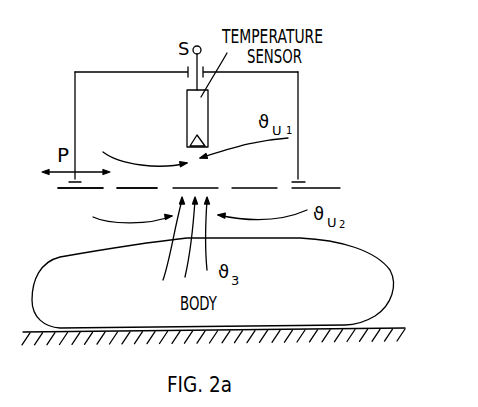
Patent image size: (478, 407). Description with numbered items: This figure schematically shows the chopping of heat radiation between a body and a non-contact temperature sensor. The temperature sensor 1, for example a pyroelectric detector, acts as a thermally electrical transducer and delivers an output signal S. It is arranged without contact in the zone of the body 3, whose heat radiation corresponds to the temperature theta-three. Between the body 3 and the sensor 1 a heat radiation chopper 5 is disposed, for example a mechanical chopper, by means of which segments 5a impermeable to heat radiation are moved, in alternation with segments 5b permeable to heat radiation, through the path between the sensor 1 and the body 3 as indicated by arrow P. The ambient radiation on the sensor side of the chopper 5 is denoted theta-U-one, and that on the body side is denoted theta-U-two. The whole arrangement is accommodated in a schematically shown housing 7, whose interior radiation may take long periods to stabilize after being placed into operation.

The temperature sensor 1 is at (208, 102).
The body 3 is at (367, 268).
The heat radiation chopper 5 is at (322, 183).
The segments impermeable to heat radiation 5a is at (80, 190).
The segments permeable to heat radiation 5b is at (110, 190).
The housing 7 is at (302, 103).